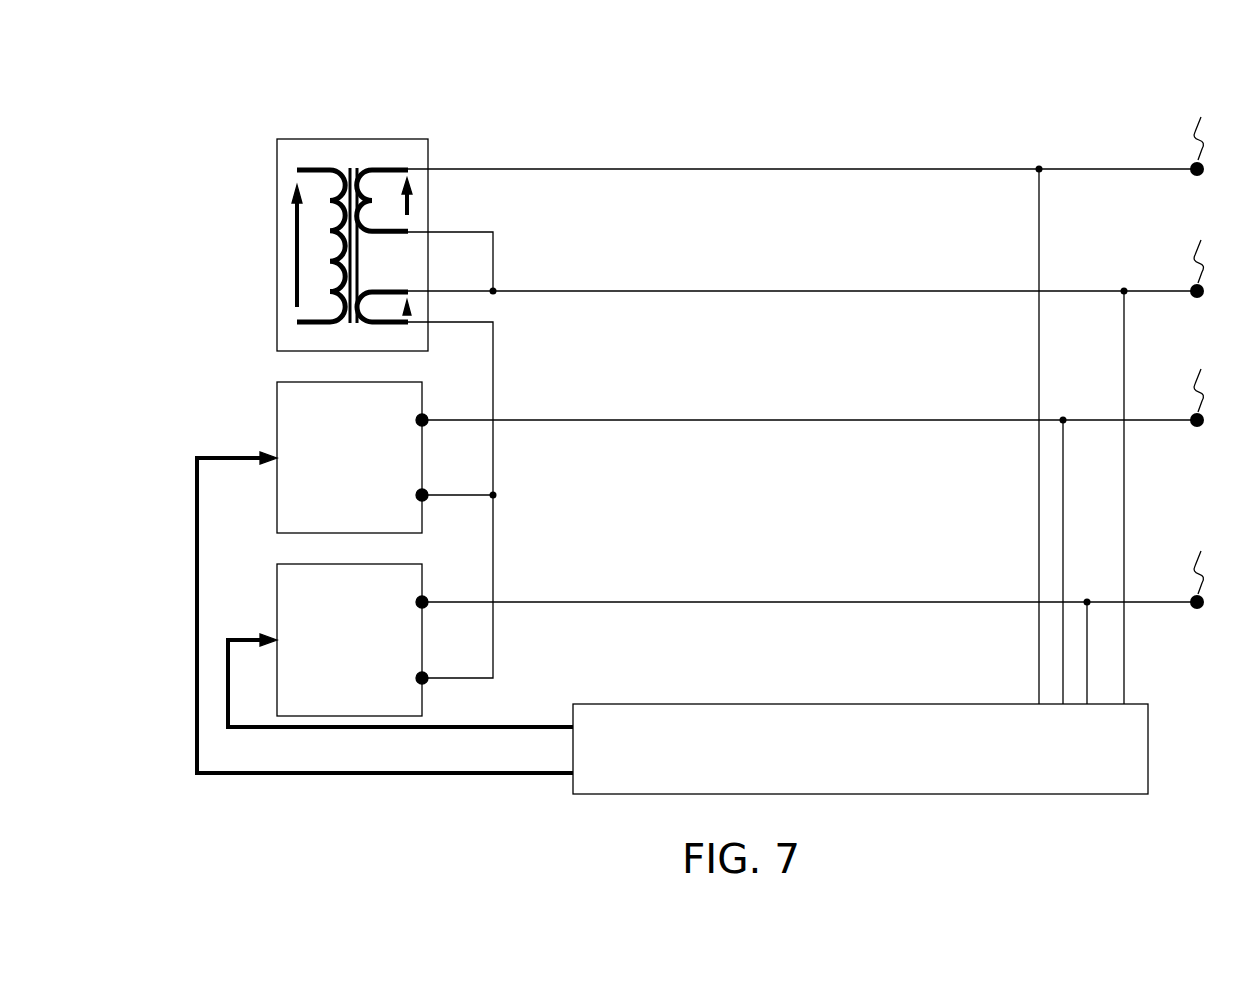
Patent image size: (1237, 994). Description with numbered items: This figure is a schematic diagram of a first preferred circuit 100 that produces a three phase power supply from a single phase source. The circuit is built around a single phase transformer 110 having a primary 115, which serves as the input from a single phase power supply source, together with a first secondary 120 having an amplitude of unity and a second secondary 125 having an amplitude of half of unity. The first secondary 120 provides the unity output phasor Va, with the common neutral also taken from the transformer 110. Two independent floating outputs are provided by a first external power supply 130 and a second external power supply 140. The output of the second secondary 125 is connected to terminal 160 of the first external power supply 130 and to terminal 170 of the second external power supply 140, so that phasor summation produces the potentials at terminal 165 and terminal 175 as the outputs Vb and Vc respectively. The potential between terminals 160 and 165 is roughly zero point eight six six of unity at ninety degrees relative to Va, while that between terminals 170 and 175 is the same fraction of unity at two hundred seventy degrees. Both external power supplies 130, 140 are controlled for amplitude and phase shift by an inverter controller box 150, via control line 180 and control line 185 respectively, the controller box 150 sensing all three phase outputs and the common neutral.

The preferred circuit 100 is at (776, 137).
The single phase transformer 110 is at (352, 139).
The primary 115 is at (330, 230).
The first secondary 120 is at (375, 185).
The second secondary 125 is at (378, 305).
The first external power supply 130 is at (277, 388).
The second external power supply 140 is at (277, 571).
The inverter controller box 150 is at (875, 704).
The terminal 160 is at (428, 490).
The terminal 165 is at (428, 415).
The terminal 170 is at (428, 673).
The terminal 175 is at (428, 597).
The control line 180 is at (229, 450).
The control line 185 is at (244, 632).